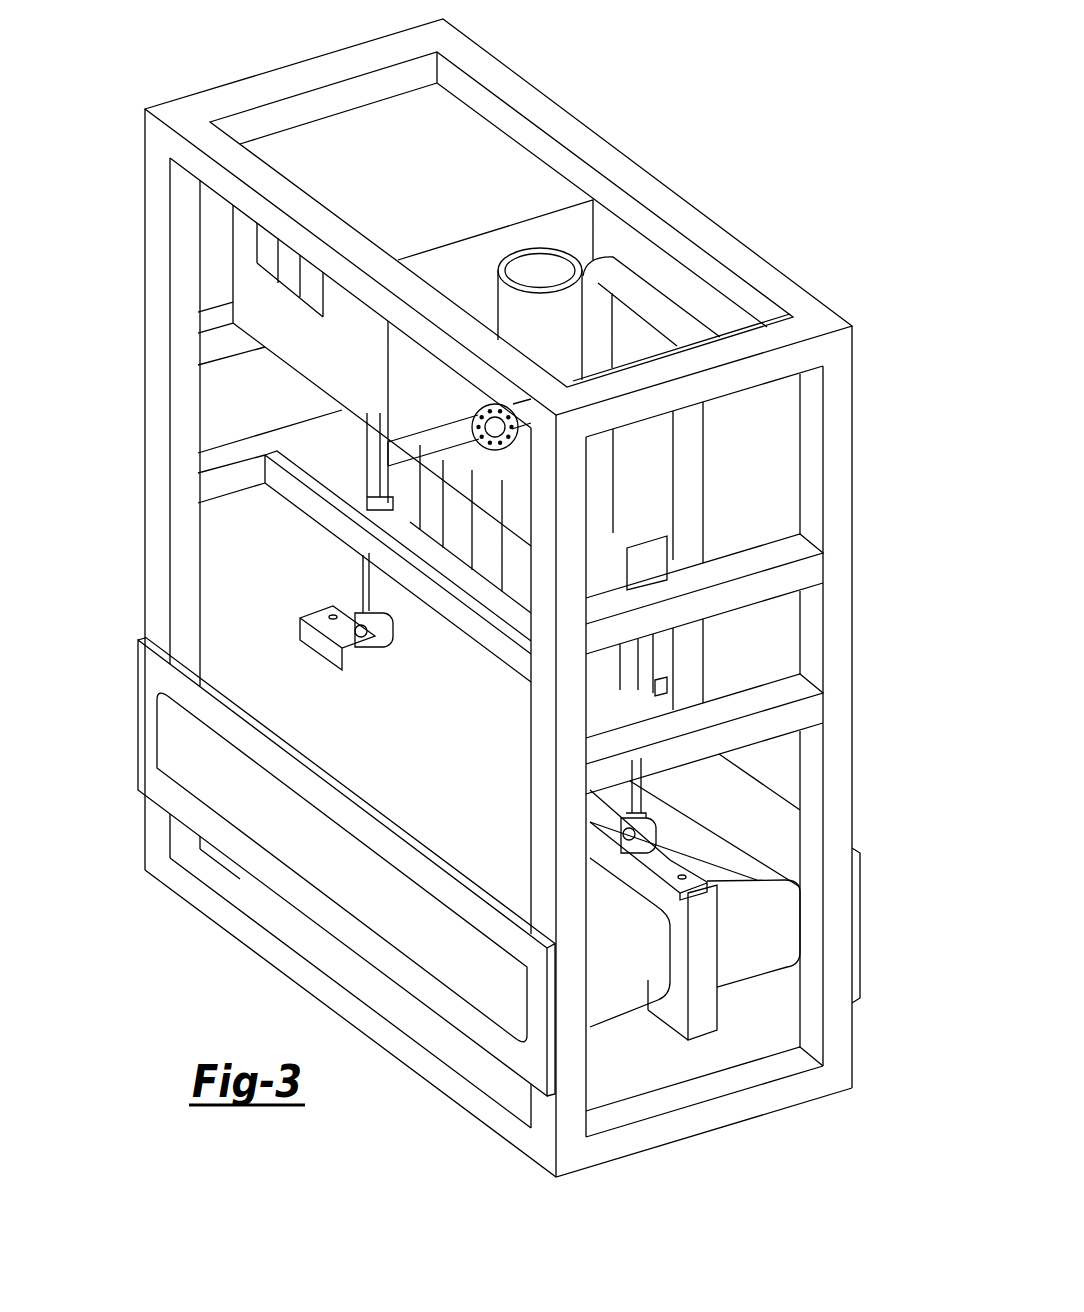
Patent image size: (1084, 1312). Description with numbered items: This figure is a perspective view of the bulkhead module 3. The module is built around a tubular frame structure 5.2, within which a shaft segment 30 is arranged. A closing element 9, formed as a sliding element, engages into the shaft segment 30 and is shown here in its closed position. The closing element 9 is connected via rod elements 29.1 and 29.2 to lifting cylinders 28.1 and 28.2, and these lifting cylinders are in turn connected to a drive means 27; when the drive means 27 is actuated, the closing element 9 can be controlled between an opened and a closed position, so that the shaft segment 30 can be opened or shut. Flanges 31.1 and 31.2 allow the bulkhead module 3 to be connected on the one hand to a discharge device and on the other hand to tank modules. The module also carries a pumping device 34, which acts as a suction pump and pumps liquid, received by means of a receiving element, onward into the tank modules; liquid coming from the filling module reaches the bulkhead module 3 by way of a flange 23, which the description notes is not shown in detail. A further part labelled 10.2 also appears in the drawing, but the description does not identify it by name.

The bulkhead module 3 is at (680, 46).
The tubular frame structure 5.2 is at (822, 327).
The closing element 9 is at (700, 1025).
The top frame ring 10.2 is at (777, 320).
The flange 23 is at (480, 414).
The drive means 27 is at (455, 124).
The lifting cylinder 28.1 is at (358, 469).
The lifting cylinder 28.2 is at (650, 661).
The rod element 29.1 is at (364, 590).
The rod element 29.2 is at (640, 793).
The shaft segment 30 is at (780, 933).
The flange 31.1 is at (148, 668).
The flange 31.2 is at (860, 870).
The pumping device 34 is at (535, 263).